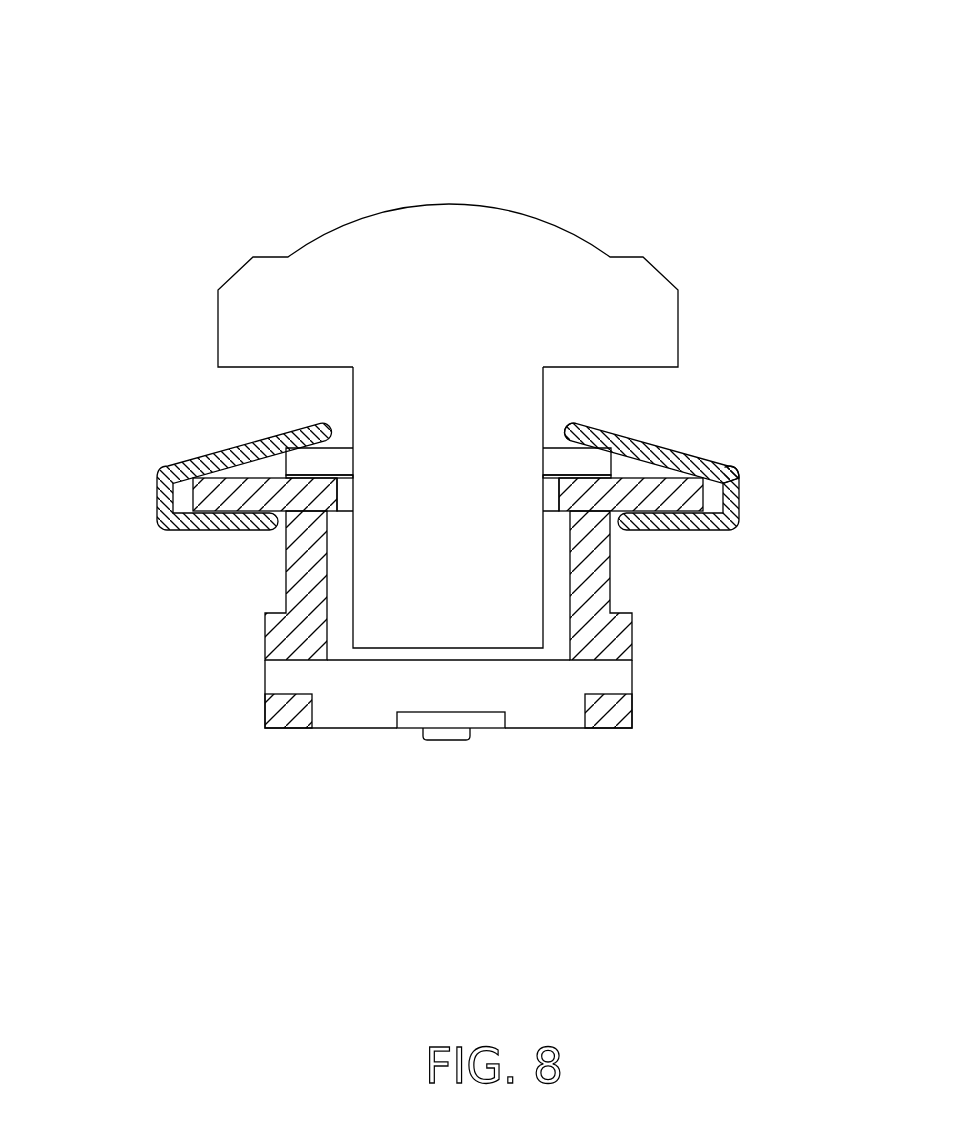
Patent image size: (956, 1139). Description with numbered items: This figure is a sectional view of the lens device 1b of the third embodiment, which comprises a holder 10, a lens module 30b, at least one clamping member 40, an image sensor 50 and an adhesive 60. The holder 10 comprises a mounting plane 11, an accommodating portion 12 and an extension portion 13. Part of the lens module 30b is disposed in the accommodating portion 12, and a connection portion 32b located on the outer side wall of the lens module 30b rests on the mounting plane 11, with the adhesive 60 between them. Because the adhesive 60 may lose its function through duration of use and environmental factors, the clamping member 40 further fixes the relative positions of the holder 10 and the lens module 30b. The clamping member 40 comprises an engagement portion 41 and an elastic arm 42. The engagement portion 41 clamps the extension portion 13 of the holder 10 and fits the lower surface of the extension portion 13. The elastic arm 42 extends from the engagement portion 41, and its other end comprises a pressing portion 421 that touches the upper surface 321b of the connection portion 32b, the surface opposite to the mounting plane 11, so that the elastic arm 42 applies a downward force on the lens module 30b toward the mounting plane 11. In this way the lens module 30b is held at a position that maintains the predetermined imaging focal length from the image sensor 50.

The lens device 1b is at (214, 64).
The lens module 30b is at (328, 242).
The connection portion 32b is at (550, 462).
The upper surface 321b is at (340, 448).
The adhesive 60 is at (342, 476).
The holder 10 is at (287, 575).
The mounting plane 11 is at (317, 480).
The accommodating portion 12 is at (560, 615).
The extension portion 13 is at (667, 500).
The clamping member 40 is at (158, 485).
The engagement portion 41 is at (740, 508).
The elastic arm 42 is at (690, 447).
The pressing portion 421 is at (602, 425).
The image sensor 50 is at (418, 717).